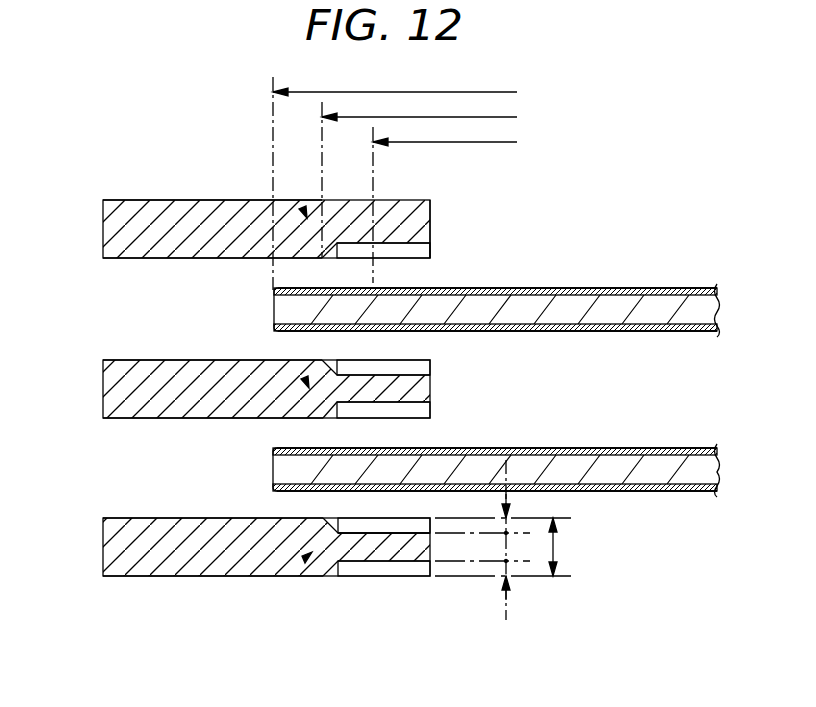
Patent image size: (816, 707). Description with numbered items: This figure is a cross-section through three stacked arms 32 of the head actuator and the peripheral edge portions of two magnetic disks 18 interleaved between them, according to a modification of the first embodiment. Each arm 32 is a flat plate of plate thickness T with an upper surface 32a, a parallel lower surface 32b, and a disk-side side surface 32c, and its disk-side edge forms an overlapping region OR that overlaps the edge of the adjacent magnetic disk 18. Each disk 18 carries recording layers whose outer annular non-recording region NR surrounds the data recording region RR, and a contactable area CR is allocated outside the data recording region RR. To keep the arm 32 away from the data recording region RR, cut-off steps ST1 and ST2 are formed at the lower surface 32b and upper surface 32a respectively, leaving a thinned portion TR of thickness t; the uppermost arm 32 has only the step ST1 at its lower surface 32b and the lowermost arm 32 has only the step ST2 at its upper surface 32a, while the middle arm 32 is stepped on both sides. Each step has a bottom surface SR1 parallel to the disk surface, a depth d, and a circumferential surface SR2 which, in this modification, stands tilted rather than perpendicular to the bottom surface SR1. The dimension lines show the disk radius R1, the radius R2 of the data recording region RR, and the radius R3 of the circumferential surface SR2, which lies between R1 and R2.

The arm 32 is at (110, 227).
The upper surface 32a is at (195, 200).
The lower surface 32b is at (135, 258).
The side surface 32c is at (430, 200).
The magnetic disk 18 is at (655, 300).
The data recording region RR is at (572, 288).
The contactable area CR is at (283, 486).
The non-recording region NR is at (300, 289).
The overlapping region OR is at (304, 211).
The thinned portion TR is at (425, 219).
The step ST1 is at (425, 251).
The step ST2 is at (430, 367).
The bottom surface SR1 is at (413, 533).
The circumferential surface SR2 is at (334, 407).
The disk radius R1 is at (412, 183).
The radius of the data recording region R2 is at (462, 205).
The radius of the circumferential surface R3 is at (436, 180).
The depth d is at (504, 538).
The thickness of the thinned portion t is at (482, 547).
The plate thickness T is at (565, 547).